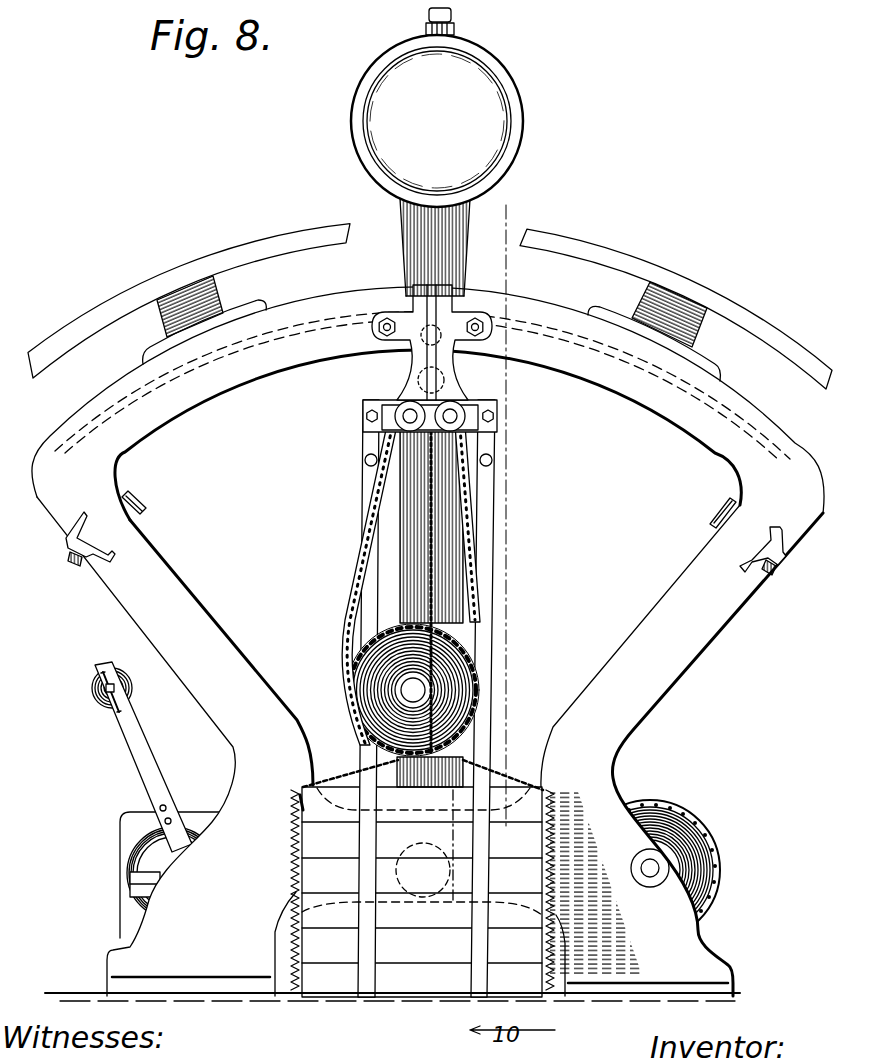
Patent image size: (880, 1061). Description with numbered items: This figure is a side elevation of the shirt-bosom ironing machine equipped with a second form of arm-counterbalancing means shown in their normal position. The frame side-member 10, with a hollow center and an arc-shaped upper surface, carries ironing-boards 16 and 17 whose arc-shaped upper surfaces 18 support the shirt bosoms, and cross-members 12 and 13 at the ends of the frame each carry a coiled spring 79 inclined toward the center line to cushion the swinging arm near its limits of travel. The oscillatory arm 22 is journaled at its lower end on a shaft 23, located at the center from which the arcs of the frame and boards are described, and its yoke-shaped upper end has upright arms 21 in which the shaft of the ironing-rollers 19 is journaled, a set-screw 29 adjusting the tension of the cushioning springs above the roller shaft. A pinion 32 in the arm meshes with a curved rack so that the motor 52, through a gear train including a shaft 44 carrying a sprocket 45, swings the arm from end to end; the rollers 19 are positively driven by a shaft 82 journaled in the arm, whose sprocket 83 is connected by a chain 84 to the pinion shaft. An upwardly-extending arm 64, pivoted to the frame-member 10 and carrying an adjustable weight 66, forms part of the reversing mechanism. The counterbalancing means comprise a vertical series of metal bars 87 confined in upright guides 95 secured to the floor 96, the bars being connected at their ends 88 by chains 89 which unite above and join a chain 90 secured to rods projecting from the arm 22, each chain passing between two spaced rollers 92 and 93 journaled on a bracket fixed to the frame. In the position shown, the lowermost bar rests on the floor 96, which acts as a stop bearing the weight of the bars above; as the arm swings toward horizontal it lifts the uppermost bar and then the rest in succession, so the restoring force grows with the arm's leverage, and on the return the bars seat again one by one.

The side-member 10 is at (632, 652).
The cross-member 12 is at (100, 565).
The cross-member 13 is at (755, 575).
The ironing-board 16 is at (172, 276).
The ironing-board 17 is at (603, 252).
The arc-shaped upper surface 18 is at (253, 245).
The ironing-roller 19 is at (521, 147).
The yoke-arm 21 is at (456, 237).
The arm 22 is at (405, 568).
The shaft 23 is at (422, 892).
The set-screw 29 is at (453, 18).
The pinion 32 is at (497, 328).
The shaft 44 is at (652, 872).
The sprocket 45 is at (645, 815).
The electric motor 52 is at (138, 833).
The arm 64 is at (137, 760).
The weight 66 is at (104, 700).
The coiled spring 79 is at (142, 500).
The shaft 82 is at (418, 690).
The sprocket 83 is at (462, 690).
The chain 84 is at (472, 530).
The metal bar 87 is at (550, 832).
The bar end connection 88 is at (298, 800).
The chain 89 is at (292, 870).
The chain 90 is at (430, 515).
The roller 92 is at (398, 402).
The roller 93 is at (465, 402).
The upright guide 95 is at (480, 840).
The floor 96 is at (413, 1002).